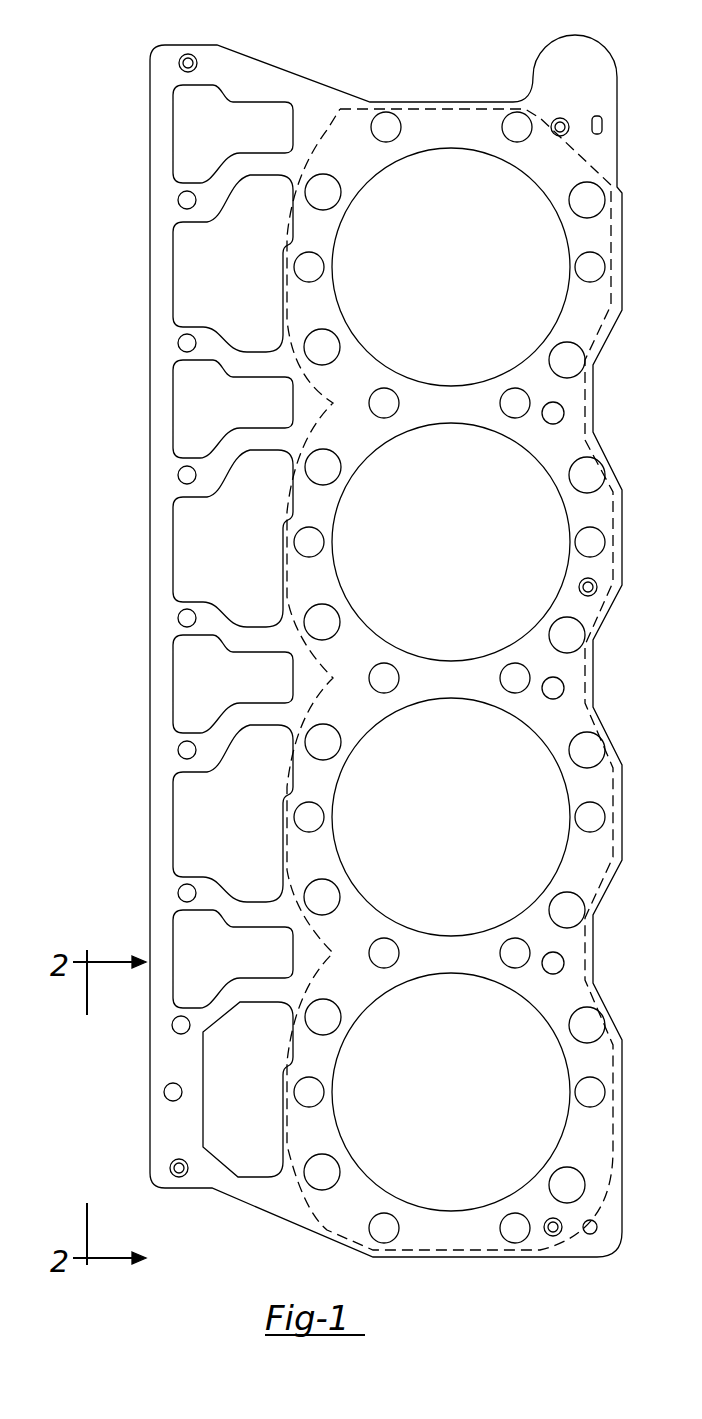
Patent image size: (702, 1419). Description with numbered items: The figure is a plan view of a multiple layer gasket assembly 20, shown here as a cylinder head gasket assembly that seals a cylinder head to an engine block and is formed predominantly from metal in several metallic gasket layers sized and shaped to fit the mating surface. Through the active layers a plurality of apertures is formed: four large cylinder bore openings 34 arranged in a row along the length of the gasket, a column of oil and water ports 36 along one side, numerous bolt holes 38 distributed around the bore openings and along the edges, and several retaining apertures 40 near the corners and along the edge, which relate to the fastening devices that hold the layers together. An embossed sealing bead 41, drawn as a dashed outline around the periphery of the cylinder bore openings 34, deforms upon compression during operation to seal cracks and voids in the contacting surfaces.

The multiple layer gasket assembly 20 is at (121, 91).
The cylinder bore openings 34 is at (462, 282).
The oil and water ports 36 is at (215, 145).
The bolt holes 38 is at (387, 121).
The retaining apertures 40 is at (188, 60).
The embossed sealing bead 41 is at (333, 110).